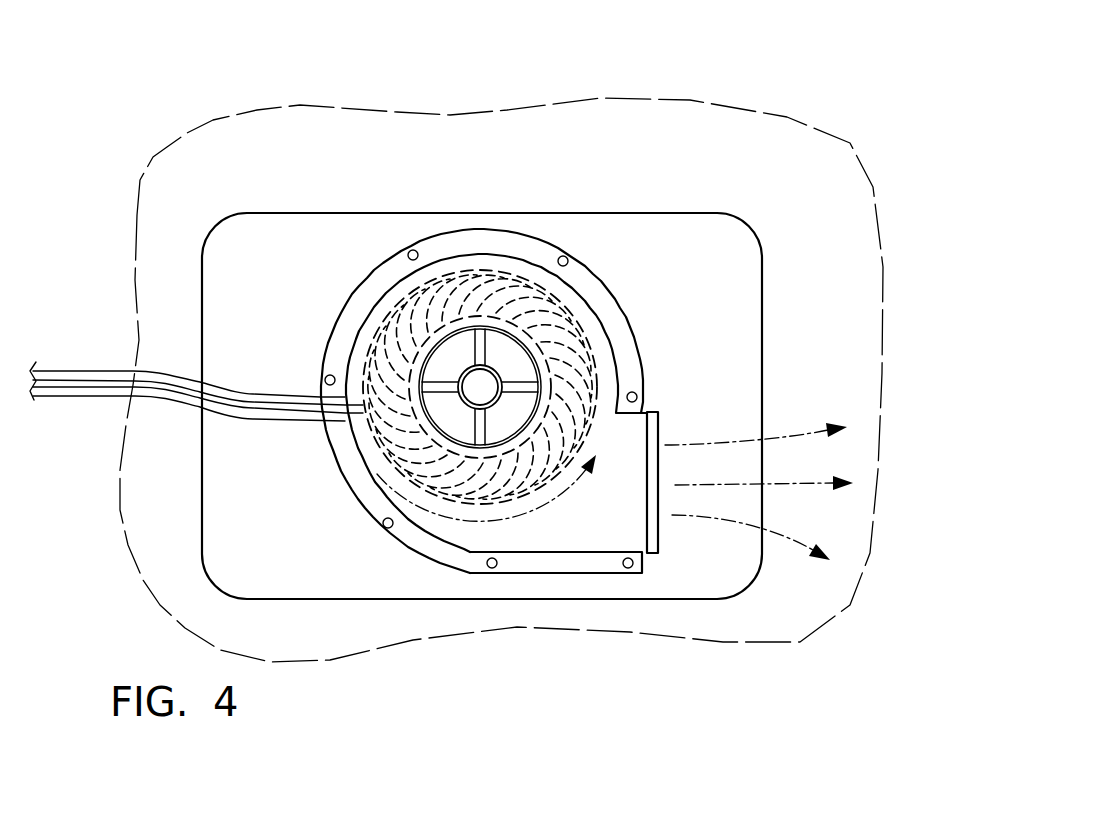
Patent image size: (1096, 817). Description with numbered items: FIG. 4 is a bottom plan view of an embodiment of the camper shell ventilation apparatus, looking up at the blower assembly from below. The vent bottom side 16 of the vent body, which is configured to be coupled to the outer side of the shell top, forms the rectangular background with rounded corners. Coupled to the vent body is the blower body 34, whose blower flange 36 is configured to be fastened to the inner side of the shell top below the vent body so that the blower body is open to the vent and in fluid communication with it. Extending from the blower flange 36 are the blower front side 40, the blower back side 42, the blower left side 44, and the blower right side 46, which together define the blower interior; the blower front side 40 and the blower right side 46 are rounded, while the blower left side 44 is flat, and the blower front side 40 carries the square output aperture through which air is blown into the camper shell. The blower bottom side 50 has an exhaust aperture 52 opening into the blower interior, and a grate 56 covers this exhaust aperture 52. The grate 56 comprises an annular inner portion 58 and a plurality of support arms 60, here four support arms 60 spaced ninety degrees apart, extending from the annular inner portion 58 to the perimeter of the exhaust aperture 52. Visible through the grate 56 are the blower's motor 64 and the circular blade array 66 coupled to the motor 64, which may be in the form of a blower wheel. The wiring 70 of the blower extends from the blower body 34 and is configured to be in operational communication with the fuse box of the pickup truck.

The vent bottom side 16 is at (345, 250).
The blower body 34 is at (603, 337).
The blower flange 36 is at (477, 240).
The blower front side 40 is at (662, 427).
The blower back side 42 is at (477, 345).
The blower left side 44 is at (530, 553).
The blower right side 46 is at (494, 252).
The blower bottom side 50 is at (401, 290).
The exhaust aperture 52 is at (510, 363).
The grate 56 is at (538, 365).
The annular inner portion 58 is at (468, 407).
The support arms 60 is at (433, 390).
The motor 64 is at (535, 433).
The circular blade array 66 is at (592, 433).
The wiring 70 is at (65, 388).